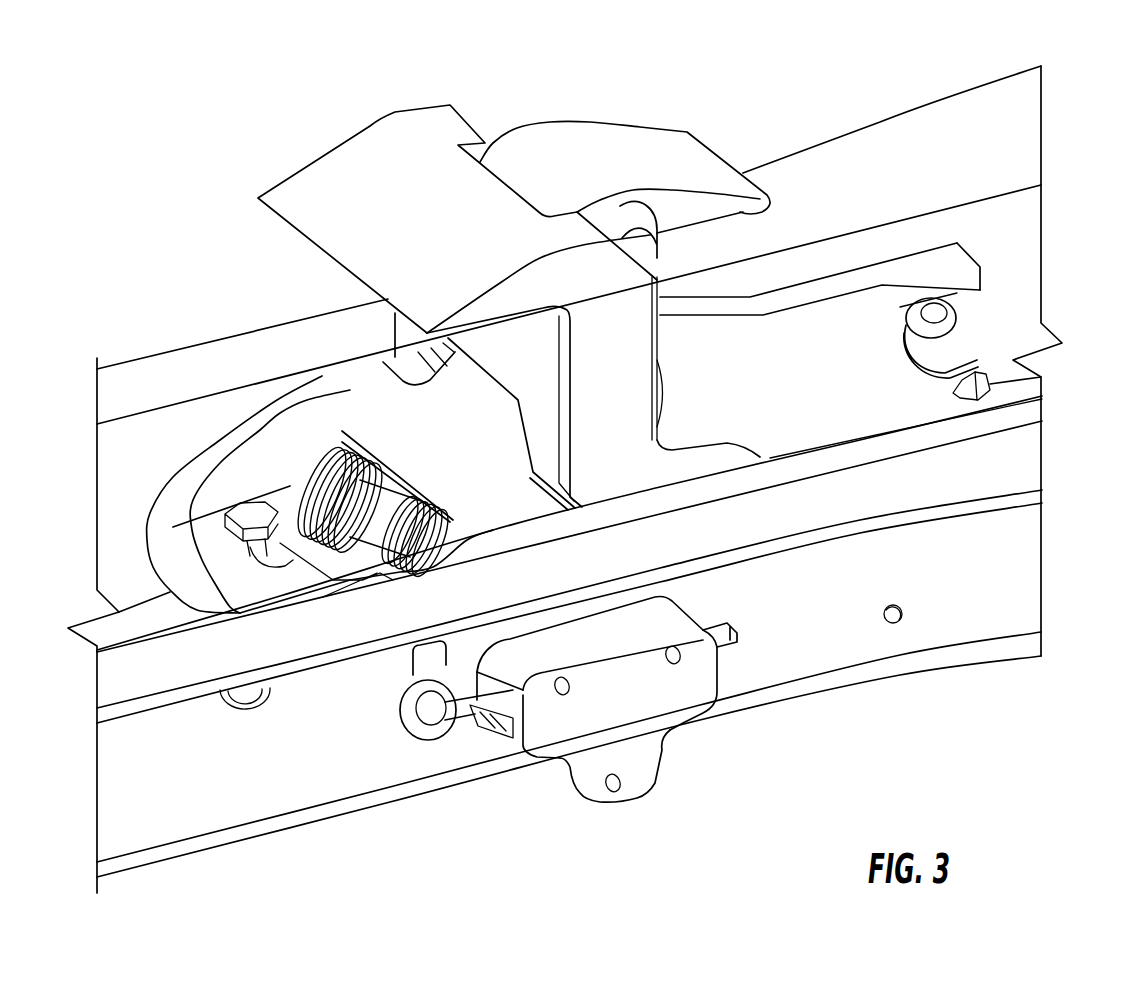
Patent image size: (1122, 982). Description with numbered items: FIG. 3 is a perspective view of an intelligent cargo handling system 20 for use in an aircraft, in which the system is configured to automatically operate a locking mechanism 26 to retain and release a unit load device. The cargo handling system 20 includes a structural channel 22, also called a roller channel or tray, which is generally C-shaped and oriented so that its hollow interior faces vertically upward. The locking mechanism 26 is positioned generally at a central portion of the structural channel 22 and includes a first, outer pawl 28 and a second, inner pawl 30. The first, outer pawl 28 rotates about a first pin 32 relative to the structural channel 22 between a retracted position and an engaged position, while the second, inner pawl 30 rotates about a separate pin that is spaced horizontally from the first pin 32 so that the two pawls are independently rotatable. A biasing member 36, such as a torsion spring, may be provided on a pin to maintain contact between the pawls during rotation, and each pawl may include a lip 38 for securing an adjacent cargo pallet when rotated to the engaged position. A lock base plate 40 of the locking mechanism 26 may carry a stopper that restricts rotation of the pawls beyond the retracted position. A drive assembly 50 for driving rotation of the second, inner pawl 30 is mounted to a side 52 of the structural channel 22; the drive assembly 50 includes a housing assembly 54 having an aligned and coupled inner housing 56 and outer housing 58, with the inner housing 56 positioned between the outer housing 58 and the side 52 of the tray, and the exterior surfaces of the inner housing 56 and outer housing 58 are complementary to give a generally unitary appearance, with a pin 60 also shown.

The cargo handling system 20 is at (95, 124).
The structural channel 22 is at (1028, 561).
The locking mechanism 26 is at (556, 80).
The first, outer pawl 28 is at (597, 374).
The second, inner pawl 30 is at (448, 408).
The first pin 32 is at (378, 518).
The biasing member 36 is at (310, 490).
The lip 38 is at (775, 210).
The lock base plate 40 is at (978, 262).
The drive assembly 50 is at (550, 842).
The side 52 is at (823, 643).
The housing assembly 54 is at (690, 735).
The inner housing 56 is at (415, 675).
The outer housing 58 is at (617, 748).
The pin 60 is at (500, 735).